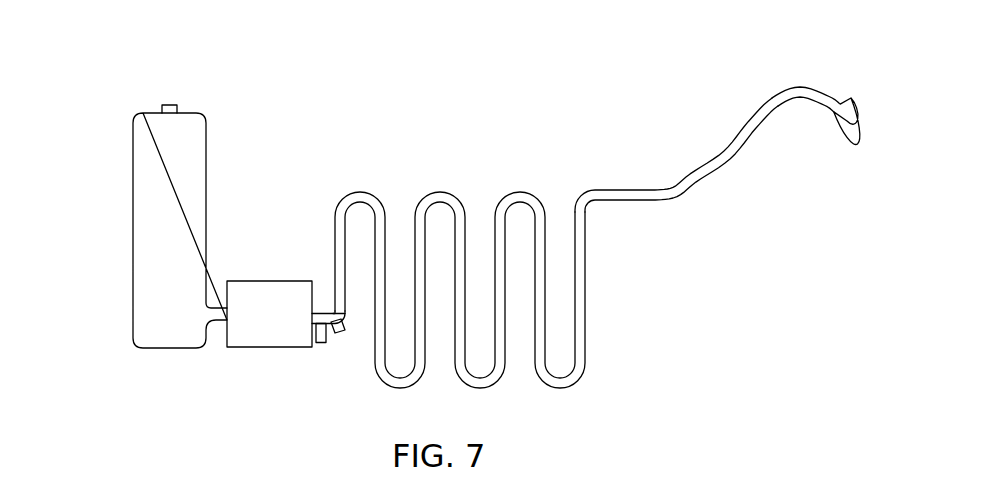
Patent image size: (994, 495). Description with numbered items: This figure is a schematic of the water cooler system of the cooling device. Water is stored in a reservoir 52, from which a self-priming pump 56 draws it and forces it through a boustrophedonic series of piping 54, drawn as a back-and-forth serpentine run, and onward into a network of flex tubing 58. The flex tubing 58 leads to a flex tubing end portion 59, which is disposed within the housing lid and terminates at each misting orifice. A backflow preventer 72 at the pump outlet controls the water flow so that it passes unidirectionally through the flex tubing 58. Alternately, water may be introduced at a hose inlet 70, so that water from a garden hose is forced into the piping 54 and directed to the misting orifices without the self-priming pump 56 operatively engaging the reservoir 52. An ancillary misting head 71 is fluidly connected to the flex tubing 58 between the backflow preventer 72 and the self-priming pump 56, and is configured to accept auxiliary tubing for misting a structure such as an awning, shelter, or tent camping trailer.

The reservoir 52 is at (140, 162).
The boustrophedonic series of piping 54 is at (513, 192).
The self-priming pump 56 is at (265, 340).
The network of flex tubing 58 is at (220, 309).
The flex tubing end portion 59 is at (807, 90).
The hose inlet 70 is at (333, 331).
The ancillary misting head 71 is at (320, 343).
The backflow preventer 72 is at (333, 308).